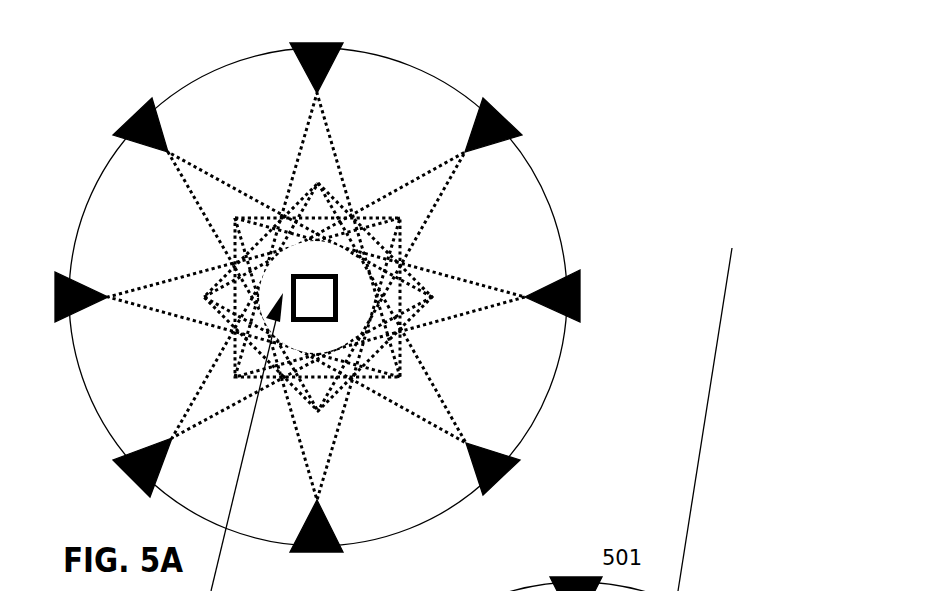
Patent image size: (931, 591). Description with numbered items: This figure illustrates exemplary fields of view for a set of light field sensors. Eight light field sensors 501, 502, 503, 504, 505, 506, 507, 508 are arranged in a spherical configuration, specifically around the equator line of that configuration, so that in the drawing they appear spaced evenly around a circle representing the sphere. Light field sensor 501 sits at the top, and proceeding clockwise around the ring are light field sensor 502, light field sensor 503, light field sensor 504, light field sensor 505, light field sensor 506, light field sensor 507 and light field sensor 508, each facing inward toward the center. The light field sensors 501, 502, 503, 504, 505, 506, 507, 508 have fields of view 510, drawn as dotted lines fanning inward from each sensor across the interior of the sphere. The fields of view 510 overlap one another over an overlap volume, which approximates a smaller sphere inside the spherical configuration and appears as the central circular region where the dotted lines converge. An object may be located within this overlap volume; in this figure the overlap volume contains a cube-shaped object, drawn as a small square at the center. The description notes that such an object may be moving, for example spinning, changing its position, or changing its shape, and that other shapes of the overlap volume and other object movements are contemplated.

The light field sensor 501 is at (316, 53).
The light field sensor 502 is at (506, 122).
The light field sensor 503 is at (576, 296).
The light field sensor 504 is at (507, 472).
The light field sensor 505 is at (316, 541).
The light field sensor 506 is at (132, 474).
The light field sensor 507 is at (65, 312).
The light field sensor 508 is at (130, 122).
The fields of view 510 is at (436, 260).